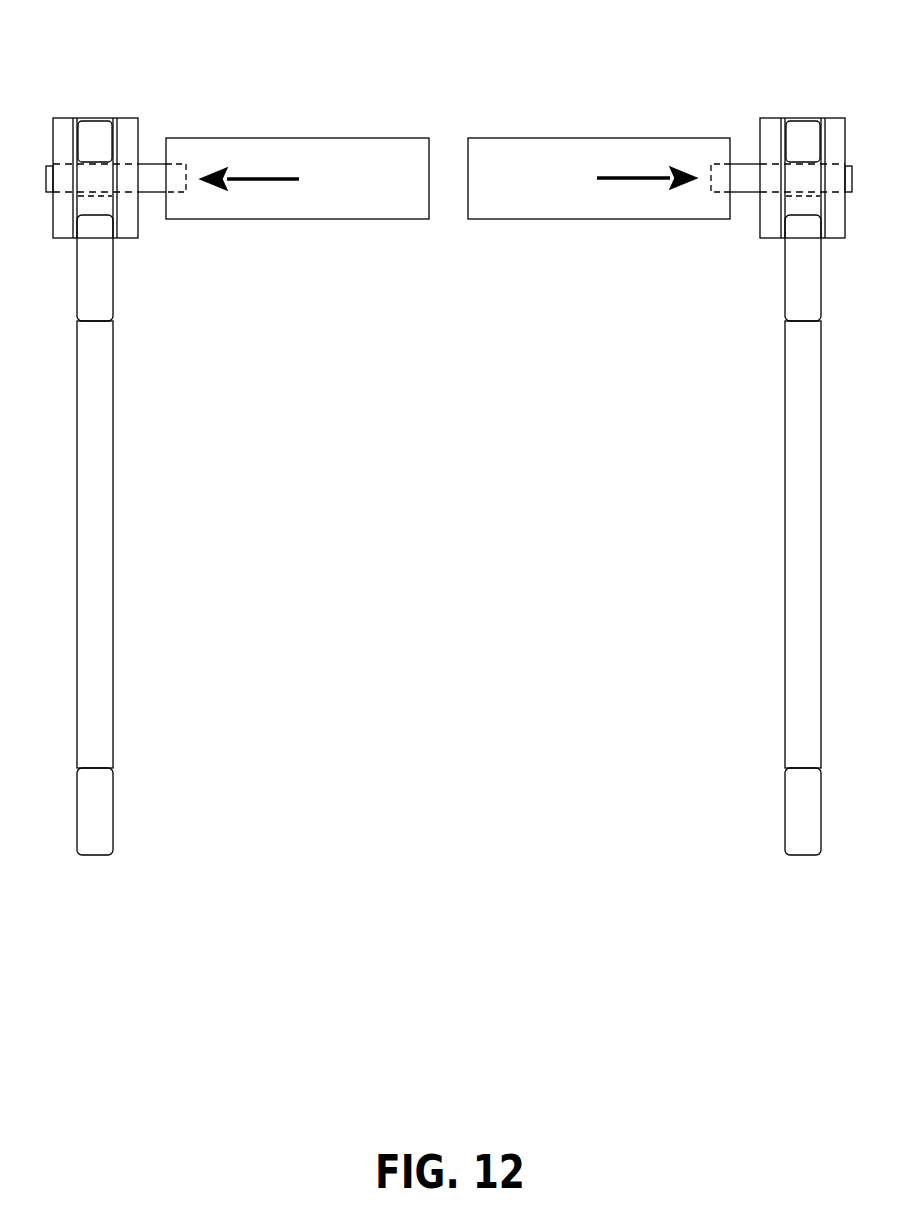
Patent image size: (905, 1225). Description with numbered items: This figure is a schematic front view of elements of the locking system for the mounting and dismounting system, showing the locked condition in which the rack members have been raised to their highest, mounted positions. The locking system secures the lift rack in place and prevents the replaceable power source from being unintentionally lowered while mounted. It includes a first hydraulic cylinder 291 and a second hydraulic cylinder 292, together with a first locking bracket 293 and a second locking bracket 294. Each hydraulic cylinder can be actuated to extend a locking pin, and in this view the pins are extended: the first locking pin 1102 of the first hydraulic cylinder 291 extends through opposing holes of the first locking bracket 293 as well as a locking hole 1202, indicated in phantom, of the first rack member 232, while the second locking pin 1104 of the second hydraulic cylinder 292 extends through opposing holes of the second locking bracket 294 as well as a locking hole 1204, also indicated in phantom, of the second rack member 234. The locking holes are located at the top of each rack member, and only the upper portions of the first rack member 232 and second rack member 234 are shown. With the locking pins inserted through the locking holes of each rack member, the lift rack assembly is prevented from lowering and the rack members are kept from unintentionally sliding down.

The first rack member 232 is at (113, 475).
The second rack member 234 is at (785, 475).
The first hydraulic cylinder 291 is at (320, 138).
The second hydraulic cylinder 292 is at (602, 138).
The first locking bracket 293 is at (52, 138).
The second locking bracket 294 is at (845, 138).
The first locking pin 1102 is at (152, 164).
The second locking pin 1104 is at (745, 164).
The locking hole 1202 is at (96, 157).
The locking hole 1204 is at (802, 157).